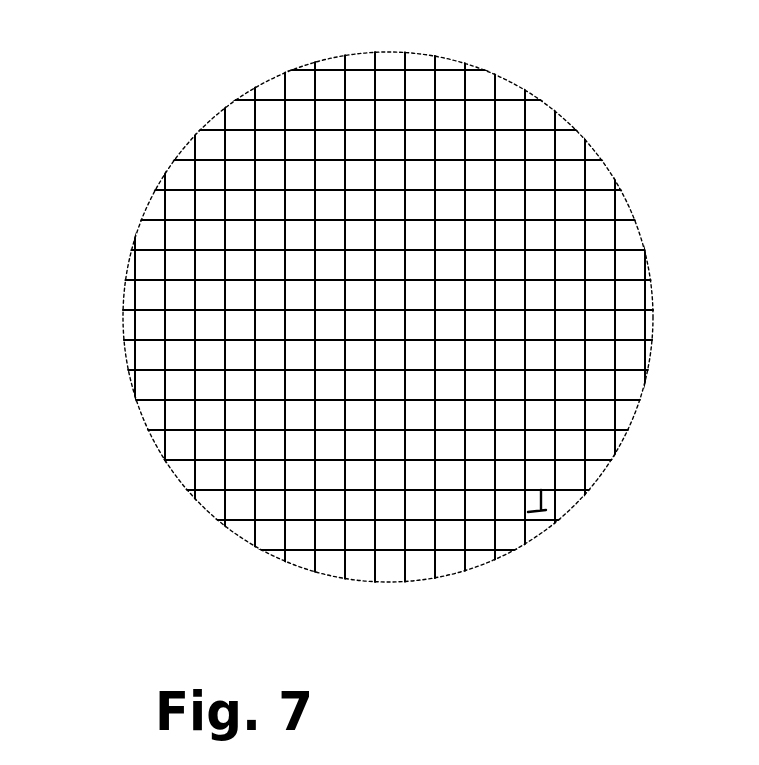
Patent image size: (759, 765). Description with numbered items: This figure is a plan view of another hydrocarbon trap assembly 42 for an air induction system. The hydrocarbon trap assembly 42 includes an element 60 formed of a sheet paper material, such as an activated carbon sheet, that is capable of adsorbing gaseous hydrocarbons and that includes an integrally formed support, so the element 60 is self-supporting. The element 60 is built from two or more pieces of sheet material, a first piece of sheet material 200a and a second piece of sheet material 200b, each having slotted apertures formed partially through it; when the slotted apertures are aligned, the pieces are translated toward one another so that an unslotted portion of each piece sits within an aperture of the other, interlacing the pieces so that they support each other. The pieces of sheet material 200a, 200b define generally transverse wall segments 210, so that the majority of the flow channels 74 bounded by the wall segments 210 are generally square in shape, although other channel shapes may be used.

The hydrocarbon trap assembly 42 is at (577, 113).
The element 60 is at (557, 205).
The flow channels 74 is at (570, 289).
The first piece of sheet material 200a is at (618, 387).
The second piece of sheet material 200b is at (624, 366).
The wall segments 210 is at (545, 510).